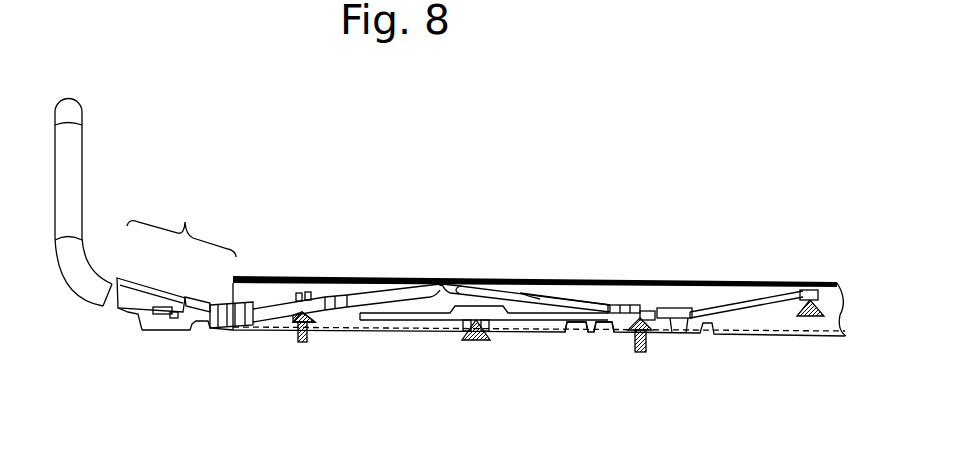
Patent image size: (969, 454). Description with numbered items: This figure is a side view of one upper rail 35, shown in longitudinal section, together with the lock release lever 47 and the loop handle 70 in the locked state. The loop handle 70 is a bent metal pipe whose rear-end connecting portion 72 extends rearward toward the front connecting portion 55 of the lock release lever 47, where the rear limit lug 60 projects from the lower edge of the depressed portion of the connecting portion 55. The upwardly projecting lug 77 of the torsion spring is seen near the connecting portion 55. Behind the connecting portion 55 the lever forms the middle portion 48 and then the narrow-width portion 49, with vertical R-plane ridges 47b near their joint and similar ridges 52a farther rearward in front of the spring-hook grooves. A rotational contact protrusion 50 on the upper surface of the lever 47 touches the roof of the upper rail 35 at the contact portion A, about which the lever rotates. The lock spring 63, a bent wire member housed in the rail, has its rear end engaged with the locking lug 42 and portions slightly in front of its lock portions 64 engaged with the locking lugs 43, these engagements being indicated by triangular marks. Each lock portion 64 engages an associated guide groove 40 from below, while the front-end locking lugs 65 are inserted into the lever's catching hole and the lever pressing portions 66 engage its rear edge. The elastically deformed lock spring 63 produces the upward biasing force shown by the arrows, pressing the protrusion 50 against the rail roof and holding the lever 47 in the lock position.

The upper rail 35 is at (725, 282).
The loop handle 70 is at (75, 147).
The rear-end connecting portion 72 is at (110, 306).
The rear limit lug 60 is at (161, 330).
The connecting portion 55 is at (181, 227).
The upwardly projecting lug 77 is at (199, 292).
The lock release lever 47 is at (278, 322).
The front-end locking lug 65 is at (301, 293).
The ridge 47b is at (336, 302).
The middle portion 48 is at (358, 296).
The contact portion A is at (440, 283).
The rotational contact protrusion 50 is at (452, 283).
The narrow-width portion 49 is at (546, 290).
The ridge 52a is at (630, 306).
The lock portion 64 is at (628, 300).
The locking lug 42 is at (817, 290).
The lever pressing portion 66 is at (373, 320).
The locking lug 43 is at (463, 335).
The lock spring 63 is at (563, 330).
The guide groove 40 is at (660, 333).